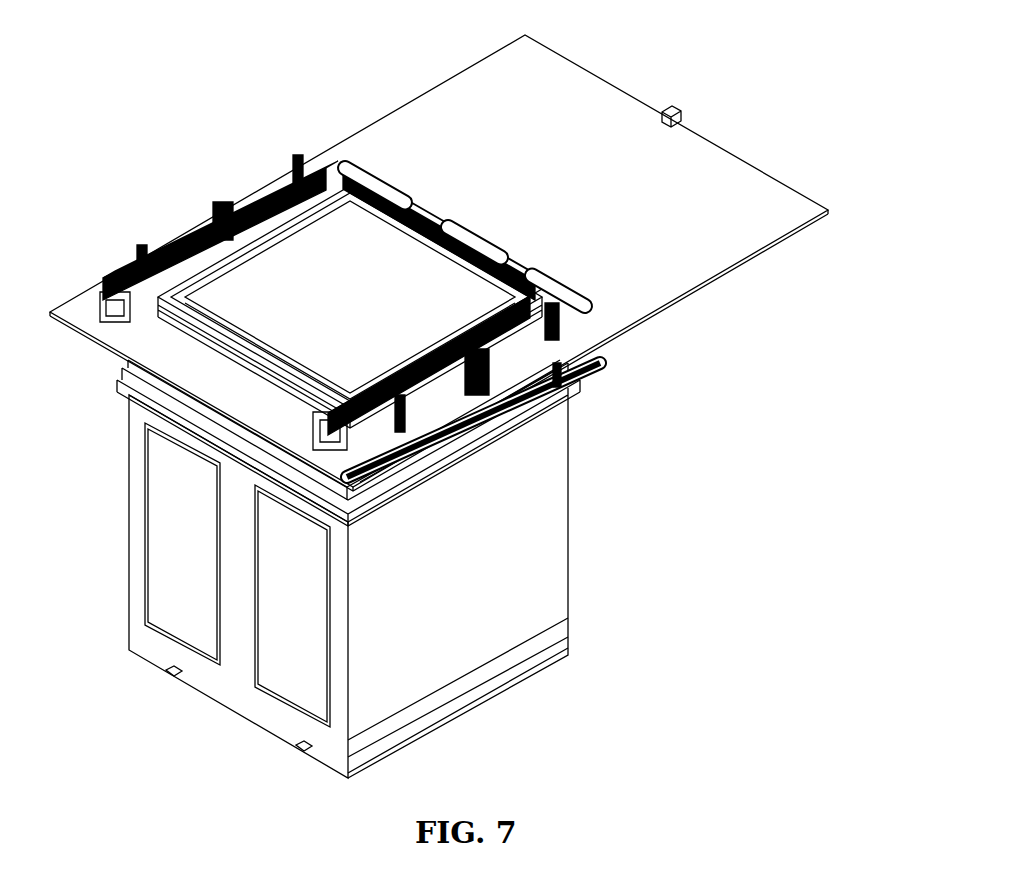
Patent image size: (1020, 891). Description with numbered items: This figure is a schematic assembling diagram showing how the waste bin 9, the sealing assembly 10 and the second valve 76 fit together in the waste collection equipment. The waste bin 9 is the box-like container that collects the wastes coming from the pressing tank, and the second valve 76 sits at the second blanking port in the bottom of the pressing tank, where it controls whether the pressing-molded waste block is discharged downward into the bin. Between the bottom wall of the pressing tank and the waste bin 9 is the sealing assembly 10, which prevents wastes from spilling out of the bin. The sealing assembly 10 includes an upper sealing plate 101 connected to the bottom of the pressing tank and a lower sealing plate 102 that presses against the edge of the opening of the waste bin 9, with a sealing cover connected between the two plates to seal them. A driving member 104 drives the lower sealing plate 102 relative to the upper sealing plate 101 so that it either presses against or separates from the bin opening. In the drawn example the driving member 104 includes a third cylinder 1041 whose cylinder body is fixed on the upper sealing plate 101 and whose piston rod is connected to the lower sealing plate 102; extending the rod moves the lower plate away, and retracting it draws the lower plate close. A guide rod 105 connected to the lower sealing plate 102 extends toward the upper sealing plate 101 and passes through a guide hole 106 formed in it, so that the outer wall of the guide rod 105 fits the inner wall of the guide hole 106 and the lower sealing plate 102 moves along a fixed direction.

The waste bin 9 is at (397, 663).
The sealing assembly 10 is at (625, 294).
The second valve 76 is at (310, 270).
The upper sealing plate 101 is at (582, 330).
The lower sealing plate 102 is at (588, 357).
The driving member 104 is at (495, 372).
The third cylinder 1041 is at (483, 380).
The guide rod 105 is at (430, 457).
The guide hole 106 is at (400, 430).